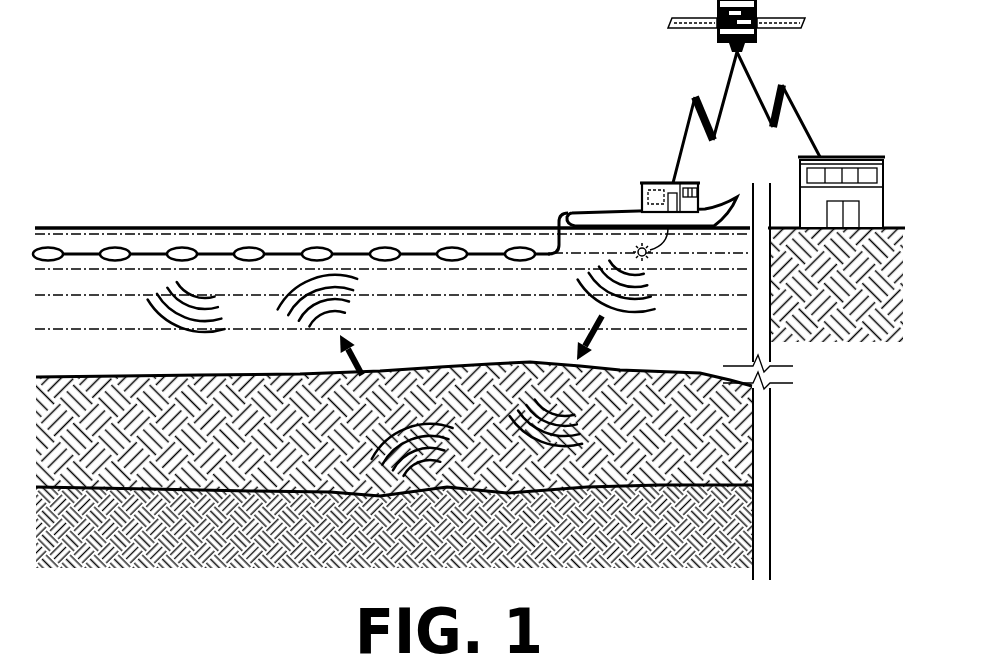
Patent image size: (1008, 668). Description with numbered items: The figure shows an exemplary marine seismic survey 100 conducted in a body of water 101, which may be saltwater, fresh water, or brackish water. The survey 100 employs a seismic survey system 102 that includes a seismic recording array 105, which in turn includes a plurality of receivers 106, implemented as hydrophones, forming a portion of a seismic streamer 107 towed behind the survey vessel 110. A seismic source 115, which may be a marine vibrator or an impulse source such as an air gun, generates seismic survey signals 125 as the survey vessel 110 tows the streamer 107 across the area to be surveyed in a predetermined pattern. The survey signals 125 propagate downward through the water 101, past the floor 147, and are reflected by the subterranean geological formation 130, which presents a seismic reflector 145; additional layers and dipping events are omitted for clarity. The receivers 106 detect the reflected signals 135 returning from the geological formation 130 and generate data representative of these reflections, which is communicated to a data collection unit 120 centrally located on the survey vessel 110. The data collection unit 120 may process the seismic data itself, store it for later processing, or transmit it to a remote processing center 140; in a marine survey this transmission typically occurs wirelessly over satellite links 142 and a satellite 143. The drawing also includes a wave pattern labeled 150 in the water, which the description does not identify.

The marine seismic survey 100 is at (128, 36).
The water 101 is at (697, 341).
The seismic survey system 102 is at (417, 132).
The seismic recording array 105 is at (172, 178).
The receivers 106 is at (519, 247).
The seismic streamer 107 is at (562, 212).
The survey vessel 110 is at (723, 200).
The seismic source 115 is at (657, 260).
The data collection unit 120 is at (642, 182).
The seismic survey signals 125 is at (575, 315).
The geological formation 130 is at (347, 451).
The reflected signals 135 is at (365, 305).
The processing center 140 is at (852, 158).
The satellite links 142 is at (687, 133).
The satellite 143 is at (670, 27).
The seismic reflector 145 is at (615, 486).
The floor 147 is at (165, 377).
The noise wavefield 150 is at (150, 322).